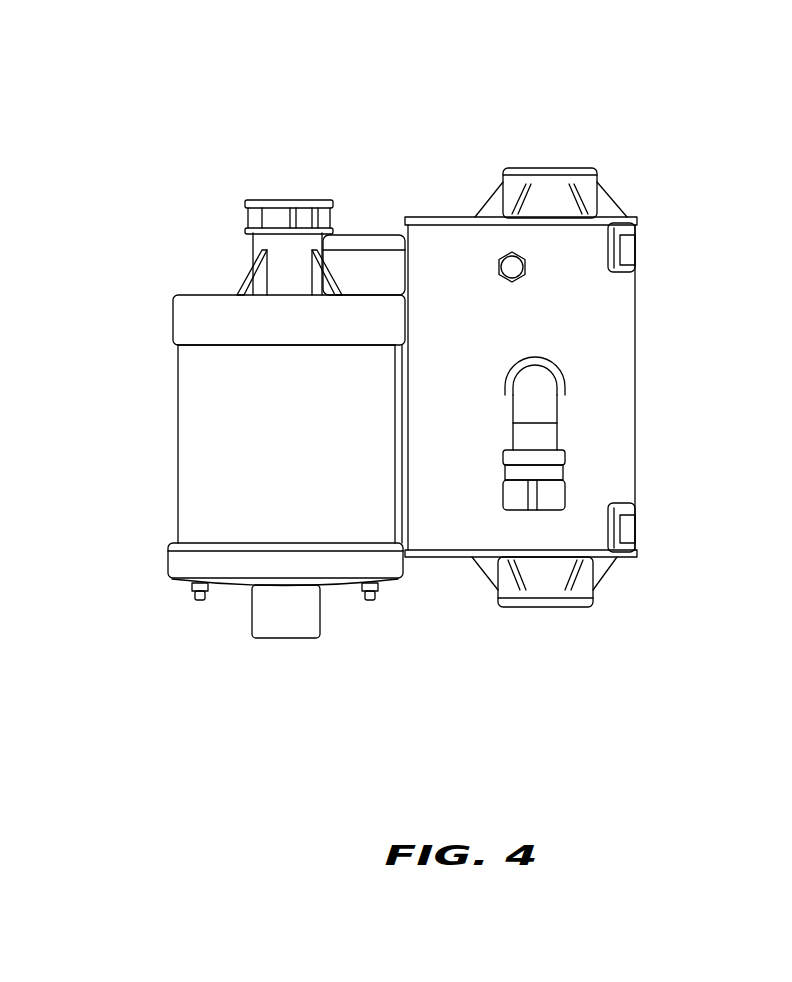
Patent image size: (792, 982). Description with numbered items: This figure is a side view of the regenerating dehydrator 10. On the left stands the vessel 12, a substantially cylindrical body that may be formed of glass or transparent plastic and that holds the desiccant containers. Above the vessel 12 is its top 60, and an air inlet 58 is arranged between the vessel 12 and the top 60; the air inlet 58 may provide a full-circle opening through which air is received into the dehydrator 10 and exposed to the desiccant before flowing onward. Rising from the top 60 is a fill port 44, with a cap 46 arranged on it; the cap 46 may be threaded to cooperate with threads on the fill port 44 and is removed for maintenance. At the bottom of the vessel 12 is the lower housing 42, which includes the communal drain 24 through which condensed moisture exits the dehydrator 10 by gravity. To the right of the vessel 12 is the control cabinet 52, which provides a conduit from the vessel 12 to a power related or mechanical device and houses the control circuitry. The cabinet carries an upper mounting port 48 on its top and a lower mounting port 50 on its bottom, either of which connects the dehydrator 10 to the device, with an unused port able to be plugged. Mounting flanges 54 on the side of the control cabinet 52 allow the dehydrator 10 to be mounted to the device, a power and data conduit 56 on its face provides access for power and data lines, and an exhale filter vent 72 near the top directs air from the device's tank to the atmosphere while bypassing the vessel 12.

The dehydrator 10 is at (532, 108).
The vessel 12 is at (176, 435).
The communal drain 24 is at (275, 641).
The lower housing 42 is at (190, 588).
The fill ports 44 is at (258, 248).
The caps 46 is at (277, 198).
The upper mounting port 48 is at (563, 168).
The lower mounting port 50 is at (555, 609).
The control cabinet 52 is at (638, 363).
The mounting flanges 54 is at (627, 240).
The power and data conduit 56 is at (545, 440).
The air inlet 58 is at (172, 350).
The top 60 is at (178, 313).
The exhale filter vent 72 is at (505, 254).